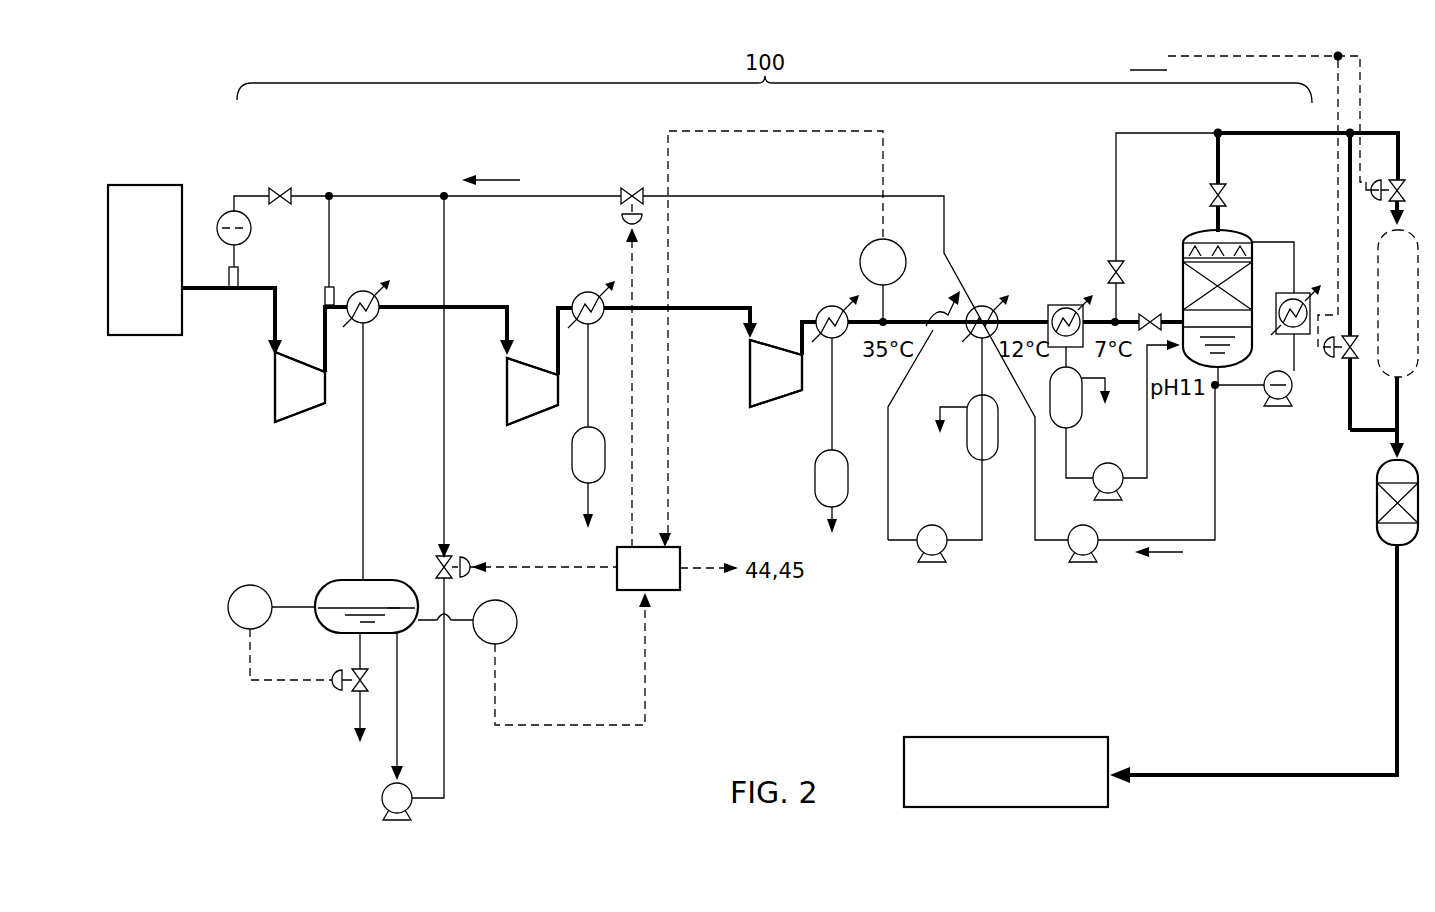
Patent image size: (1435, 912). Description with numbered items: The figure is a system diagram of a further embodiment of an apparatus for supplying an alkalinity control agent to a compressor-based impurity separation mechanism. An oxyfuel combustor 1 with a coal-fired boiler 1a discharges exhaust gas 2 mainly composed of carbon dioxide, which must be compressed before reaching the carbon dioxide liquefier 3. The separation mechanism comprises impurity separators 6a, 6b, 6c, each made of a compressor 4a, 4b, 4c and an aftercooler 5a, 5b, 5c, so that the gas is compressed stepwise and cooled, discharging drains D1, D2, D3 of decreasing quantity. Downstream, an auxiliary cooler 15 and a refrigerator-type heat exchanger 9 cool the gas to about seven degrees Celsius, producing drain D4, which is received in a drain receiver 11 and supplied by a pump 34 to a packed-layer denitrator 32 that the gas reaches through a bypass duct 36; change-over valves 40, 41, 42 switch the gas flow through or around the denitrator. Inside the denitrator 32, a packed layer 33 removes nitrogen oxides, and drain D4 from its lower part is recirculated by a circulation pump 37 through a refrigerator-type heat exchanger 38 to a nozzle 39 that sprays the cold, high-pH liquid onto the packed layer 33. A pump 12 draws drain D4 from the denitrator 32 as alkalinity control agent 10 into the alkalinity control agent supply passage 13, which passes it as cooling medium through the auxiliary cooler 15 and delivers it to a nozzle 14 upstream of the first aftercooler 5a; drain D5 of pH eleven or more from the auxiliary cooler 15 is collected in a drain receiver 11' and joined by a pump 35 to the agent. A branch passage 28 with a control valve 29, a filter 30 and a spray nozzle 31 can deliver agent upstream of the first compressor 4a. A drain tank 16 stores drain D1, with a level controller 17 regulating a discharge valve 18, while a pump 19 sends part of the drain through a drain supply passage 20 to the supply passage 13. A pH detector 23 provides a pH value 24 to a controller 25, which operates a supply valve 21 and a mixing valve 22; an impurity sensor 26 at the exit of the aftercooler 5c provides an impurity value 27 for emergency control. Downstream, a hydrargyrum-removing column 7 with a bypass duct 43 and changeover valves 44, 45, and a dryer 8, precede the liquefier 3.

The oxyfuel combustor 1 is at (150, 172).
The coal-fired boiler 1a is at (125, 340).
The exhaust gas 2 is at (203, 300).
The carbon dioxide liquefier 3 is at (940, 737).
The compressor 4a is at (275, 423).
The compressor 4b is at (507, 426).
The compressor 4c is at (750, 408).
The aftercooler 5a is at (370, 326).
The aftercooler 5b is at (591, 326).
The aftercooler 5c is at (836, 340).
The impurity separator 6a is at (301, 286).
The impurity separator 6b is at (543, 300).
The impurity separator 6c is at (795, 312).
The hydrargyrum-removing column 7 is at (1395, 385).
The dryer 8 is at (1377, 516).
The refrigerator-type heat exchanger 9 is at (1064, 303).
The alkalinity control agent 10 is at (500, 180).
The drain receiver 11 is at (1109, 422).
The drain receiver 11' is at (935, 415).
The pump 12 is at (1086, 566).
The alkalinity control agent supply passage 13 is at (563, 195).
The nozzle 14 is at (337, 292).
The auxiliary cooler 15 is at (982, 305).
The drain tank 16 is at (338, 580).
The level controller 17 is at (228, 607).
The discharge valve 18 is at (342, 690).
The pump 19 is at (382, 798).
The drain supply passage 20 is at (443, 438).
The supply valve 21 is at (632, 186).
The mixing valve 22 is at (470, 577).
The pH detector 23 is at (517, 630).
The pH value 24 is at (612, 725).
The controller 25 is at (676, 590).
The impurity sensor 26 is at (862, 244).
The impurity value 27 is at (883, 160).
The branch passage 28 is at (246, 195).
The control valve 29 is at (288, 190).
The filter 30 is at (222, 216).
The spray nozzle 31 is at (228, 278).
The packed-layer denitrator 32 is at (1270, 224).
The packed layer 33 is at (1247, 293).
The pump 34 is at (1125, 492).
The pump 35 is at (928, 566).
The bypass duct 36 is at (1172, 316).
The circulation pump 37 is at (1272, 406).
The refrigerator-type heat exchanger 38 is at (1300, 292).
The nozzle 39 is at (1235, 262).
The change-over valve 40 is at (1150, 312).
The change-over valve 41 is at (1116, 258).
The change-over valve 42 is at (1210, 190).
The bypass duct 43 is at (1350, 432).
The changeover valve 44 is at (1340, 356).
The changeover valve 45 is at (1390, 196).
The drain D1 is at (388, 607).
The drain D2 is at (588, 511).
The drain D3 is at (832, 514).
The drain D4 is at (1148, 463).
The drain D5 is at (982, 502).